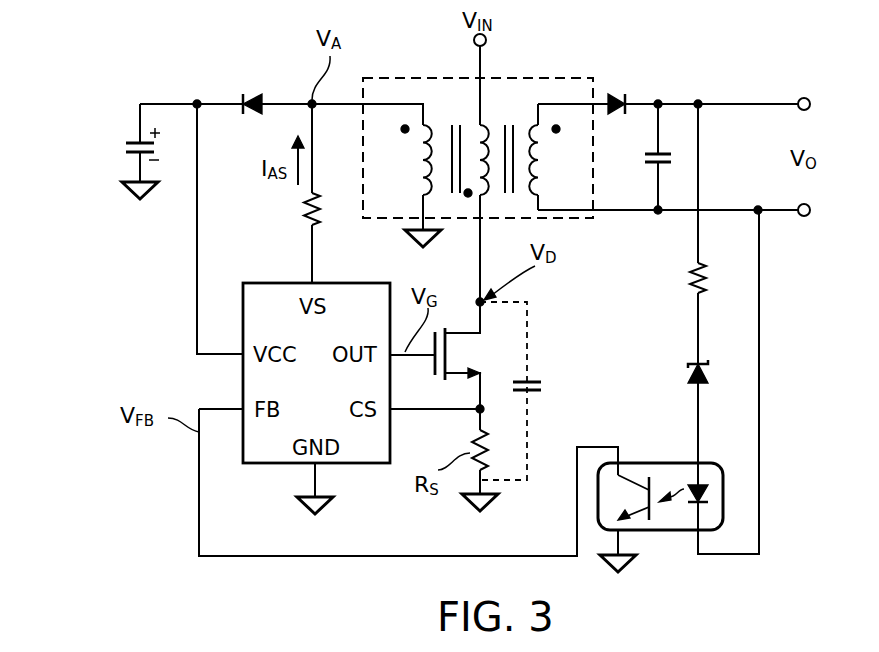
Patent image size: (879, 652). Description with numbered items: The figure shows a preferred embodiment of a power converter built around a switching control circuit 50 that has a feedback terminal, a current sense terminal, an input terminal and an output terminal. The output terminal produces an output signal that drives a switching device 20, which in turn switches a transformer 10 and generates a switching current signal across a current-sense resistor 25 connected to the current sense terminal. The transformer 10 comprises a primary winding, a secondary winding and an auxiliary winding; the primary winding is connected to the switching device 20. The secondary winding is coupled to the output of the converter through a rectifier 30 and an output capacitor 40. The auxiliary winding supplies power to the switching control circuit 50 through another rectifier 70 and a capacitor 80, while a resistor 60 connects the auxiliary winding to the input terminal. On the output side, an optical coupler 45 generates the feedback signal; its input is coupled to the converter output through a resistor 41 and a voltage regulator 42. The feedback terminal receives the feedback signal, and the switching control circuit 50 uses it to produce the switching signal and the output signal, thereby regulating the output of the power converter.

The transformer 10 is at (530, 78).
The switching device 20 is at (473, 350).
The current-sense resistor 25 is at (543, 386).
The rectifier 30 is at (618, 92).
The output capacitor 40 is at (672, 157).
The resistor 41 is at (712, 283).
The voltage regulator 42 is at (712, 375).
The optical coupler 45 is at (642, 460).
The switching control circuit 50 is at (257, 281).
The resistor 60 is at (322, 216).
The rectifier 70 is at (254, 92).
The capacitor 80 is at (122, 148).